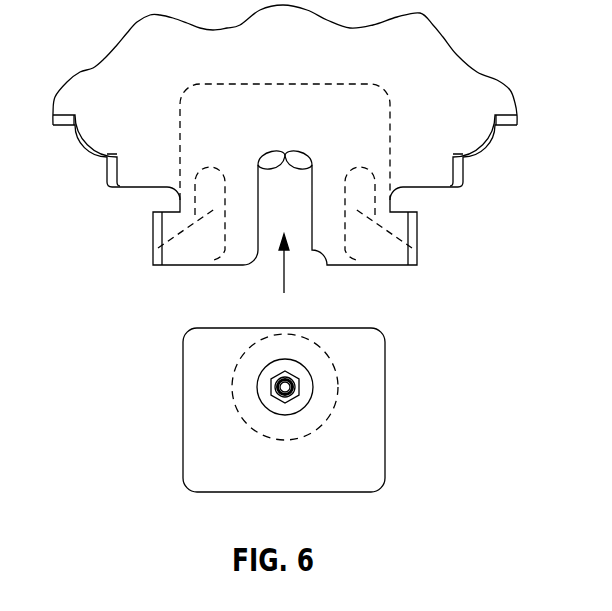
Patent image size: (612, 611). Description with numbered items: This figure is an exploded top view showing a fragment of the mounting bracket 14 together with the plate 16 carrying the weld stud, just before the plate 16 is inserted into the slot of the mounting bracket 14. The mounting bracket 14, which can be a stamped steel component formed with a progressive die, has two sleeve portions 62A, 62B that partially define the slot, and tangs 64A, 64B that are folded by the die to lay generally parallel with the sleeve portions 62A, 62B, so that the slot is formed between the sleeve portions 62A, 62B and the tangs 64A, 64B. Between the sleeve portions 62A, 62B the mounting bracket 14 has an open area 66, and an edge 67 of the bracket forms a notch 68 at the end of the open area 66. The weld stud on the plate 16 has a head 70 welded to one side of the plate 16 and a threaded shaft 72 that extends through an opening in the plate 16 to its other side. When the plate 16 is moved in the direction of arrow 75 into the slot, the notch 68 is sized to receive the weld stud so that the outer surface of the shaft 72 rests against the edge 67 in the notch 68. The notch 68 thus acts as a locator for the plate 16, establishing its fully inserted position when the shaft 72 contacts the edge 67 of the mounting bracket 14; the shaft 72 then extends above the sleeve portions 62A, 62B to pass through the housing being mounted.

The mounting bracket 14 is at (112, 186).
The plate 16 is at (372, 473).
The sleeve portion 62A is at (235, 258).
The sleeve portion 62B is at (335, 258).
The tang 64A is at (150, 254).
The tang 64B is at (425, 255).
The open area 66 is at (272, 240).
The edge 67 is at (300, 157).
The notch 68 is at (270, 157).
The head 70 is at (283, 442).
The threaded shaft 72 is at (303, 388).
The arrow 75 is at (285, 278).